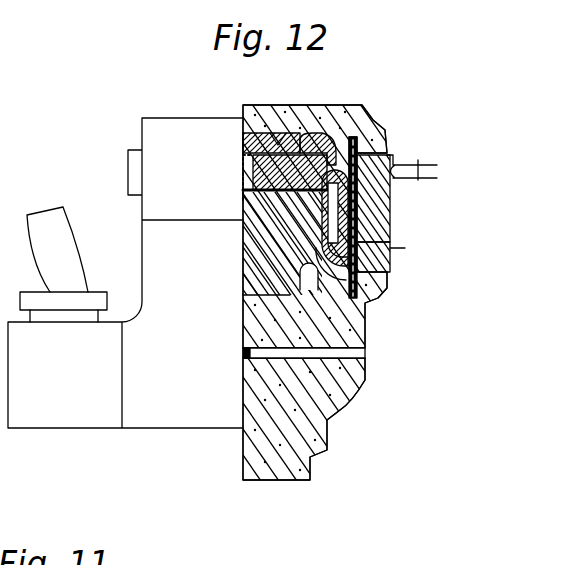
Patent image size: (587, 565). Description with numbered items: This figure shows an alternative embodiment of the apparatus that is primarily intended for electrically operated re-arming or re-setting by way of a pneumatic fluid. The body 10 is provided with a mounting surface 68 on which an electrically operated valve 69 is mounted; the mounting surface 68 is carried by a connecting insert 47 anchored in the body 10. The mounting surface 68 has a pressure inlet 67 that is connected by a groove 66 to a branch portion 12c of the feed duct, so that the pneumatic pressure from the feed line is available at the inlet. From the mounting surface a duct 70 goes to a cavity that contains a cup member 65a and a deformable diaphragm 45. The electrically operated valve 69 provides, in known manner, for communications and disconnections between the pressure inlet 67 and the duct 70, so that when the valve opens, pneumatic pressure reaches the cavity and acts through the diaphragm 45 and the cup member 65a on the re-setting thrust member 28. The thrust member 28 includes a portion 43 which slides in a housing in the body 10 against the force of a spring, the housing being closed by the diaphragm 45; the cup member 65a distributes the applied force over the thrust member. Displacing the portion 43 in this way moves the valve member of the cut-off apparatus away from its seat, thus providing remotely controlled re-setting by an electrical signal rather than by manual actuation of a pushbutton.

The body 10 is at (243, 455).
The branch portion of the duct 12c is at (340, 353).
The thrust member 28 is at (420, 158).
The portion 43 is at (386, 219).
The deformable diaphragm 45 is at (390, 250).
The connecting insert 47 is at (258, 265).
The cup member 65a is at (390, 274).
The groove 66 is at (318, 126).
The pressure inlet 67 is at (281, 130).
The mounting surface 68 is at (241, 323).
The electrically operated valve 69 is at (142, 217).
The duct 70 is at (258, 230).